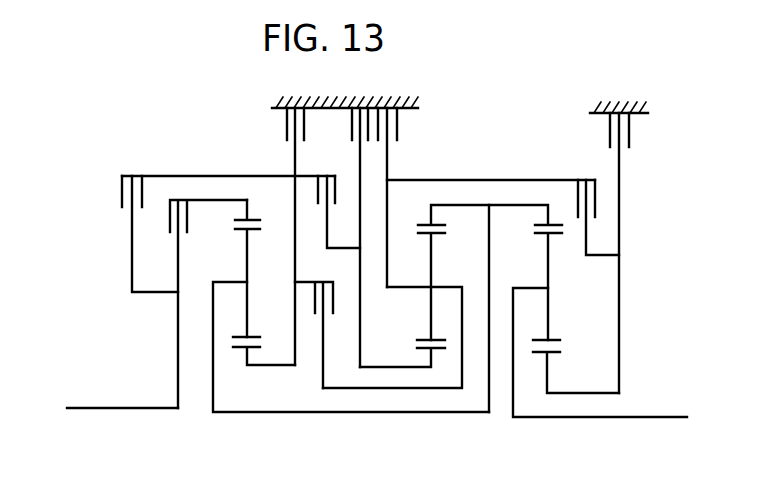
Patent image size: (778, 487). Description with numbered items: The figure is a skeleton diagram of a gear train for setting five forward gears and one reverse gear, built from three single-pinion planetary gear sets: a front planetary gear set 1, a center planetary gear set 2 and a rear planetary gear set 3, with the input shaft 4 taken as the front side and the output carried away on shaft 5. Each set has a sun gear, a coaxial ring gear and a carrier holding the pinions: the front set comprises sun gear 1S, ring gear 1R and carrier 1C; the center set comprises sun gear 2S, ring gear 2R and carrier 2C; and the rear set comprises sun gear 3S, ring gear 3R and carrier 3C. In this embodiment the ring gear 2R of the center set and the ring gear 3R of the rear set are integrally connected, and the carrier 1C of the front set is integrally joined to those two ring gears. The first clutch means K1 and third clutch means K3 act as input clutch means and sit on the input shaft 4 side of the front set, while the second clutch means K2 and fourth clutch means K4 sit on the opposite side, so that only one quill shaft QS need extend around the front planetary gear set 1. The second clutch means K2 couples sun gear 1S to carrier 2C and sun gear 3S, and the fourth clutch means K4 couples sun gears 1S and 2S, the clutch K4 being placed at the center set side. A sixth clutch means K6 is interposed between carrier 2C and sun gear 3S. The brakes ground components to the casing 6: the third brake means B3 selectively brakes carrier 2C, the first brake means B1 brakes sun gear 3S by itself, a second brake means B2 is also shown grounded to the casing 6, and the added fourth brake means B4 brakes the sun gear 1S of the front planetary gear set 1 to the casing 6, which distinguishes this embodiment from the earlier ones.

The front planetary gear set 1 is at (247, 374).
The center planetary gear set 2 is at (413, 375).
The rear planetary gear set 3 is at (548, 397).
The input shaft 4 is at (128, 408).
The output shaft 5 is at (654, 418).
The casing 6 is at (335, 108).
The ring gear of front planetary gear set 1R is at (235, 220).
The carrier of front planetary gear set 1C is at (226, 282).
The sun gear of front planetary gear set 1S is at (258, 347).
The ring gear of center planetary gear set 2R is at (445, 223).
The carrier of center planetary gear set 2C is at (446, 287).
The sun gear of center planetary gear set 2S is at (417, 348).
The ring gear of rear planetary gear set 3R is at (535, 223).
The carrier of rear planetary gear set 3C is at (528, 288).
The sun gear of rear planetary gear set 3S is at (558, 354).
The first clutch means K1 is at (208, 293).
The second clutch means K2 is at (314, 324).
The third clutch means K3 is at (149, 220).
The fourth clutch means K4 is at (338, 202).
The sixth clutch means K6 is at (597, 206).
The quill shaft QS is at (204, 175).
The first brake means B1 is at (635, 253).
The second brake B2 is at (347, 237).
The third brake means B3 is at (402, 197).
The fourth brake means B4 is at (278, 236).